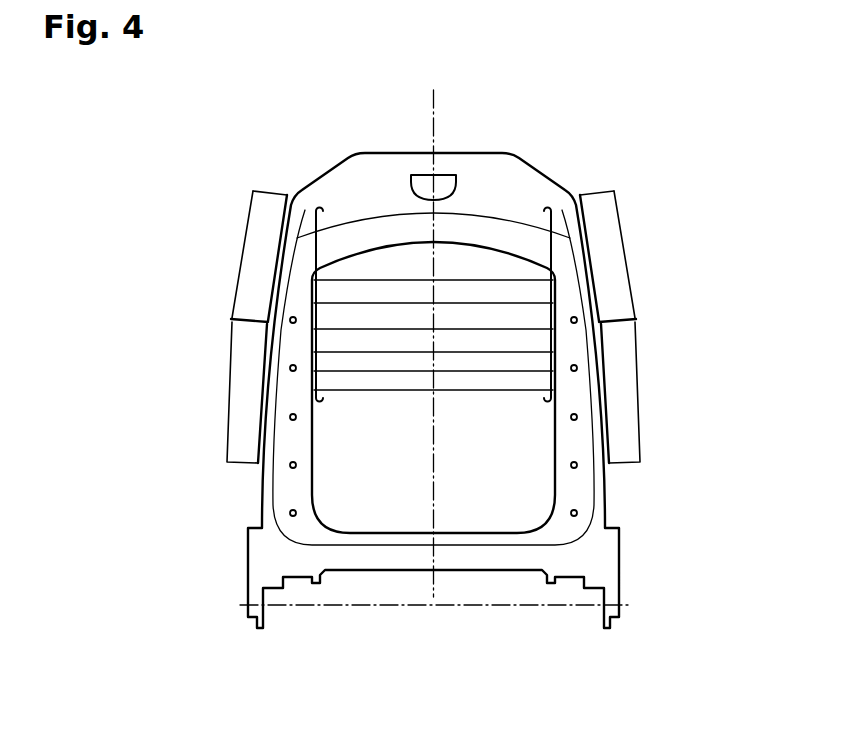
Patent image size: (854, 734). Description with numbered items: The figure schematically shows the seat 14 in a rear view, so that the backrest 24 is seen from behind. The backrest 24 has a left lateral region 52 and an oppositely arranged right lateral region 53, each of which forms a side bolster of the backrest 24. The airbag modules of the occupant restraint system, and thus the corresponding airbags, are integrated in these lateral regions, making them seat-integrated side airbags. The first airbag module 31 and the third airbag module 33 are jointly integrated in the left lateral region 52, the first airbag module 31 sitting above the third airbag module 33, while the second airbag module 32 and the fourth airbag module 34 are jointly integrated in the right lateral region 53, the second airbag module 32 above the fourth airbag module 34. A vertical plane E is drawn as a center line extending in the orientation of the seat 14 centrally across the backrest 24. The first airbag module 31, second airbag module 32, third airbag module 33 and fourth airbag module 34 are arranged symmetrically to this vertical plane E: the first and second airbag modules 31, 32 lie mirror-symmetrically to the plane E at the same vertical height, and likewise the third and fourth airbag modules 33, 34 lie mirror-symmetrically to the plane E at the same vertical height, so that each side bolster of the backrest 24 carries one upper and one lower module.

The seat 14 is at (206, 149).
The backrest 24 is at (361, 178).
The first airbag module 31 is at (256, 253).
The second airbag module 32 is at (609, 257).
The third airbag module 33 is at (247, 377).
The fourth airbag module 34 is at (618, 377).
The left lateral region 52 is at (207, 305).
The right lateral region 53 is at (660, 304).
The vertical plane E is at (434, 112).